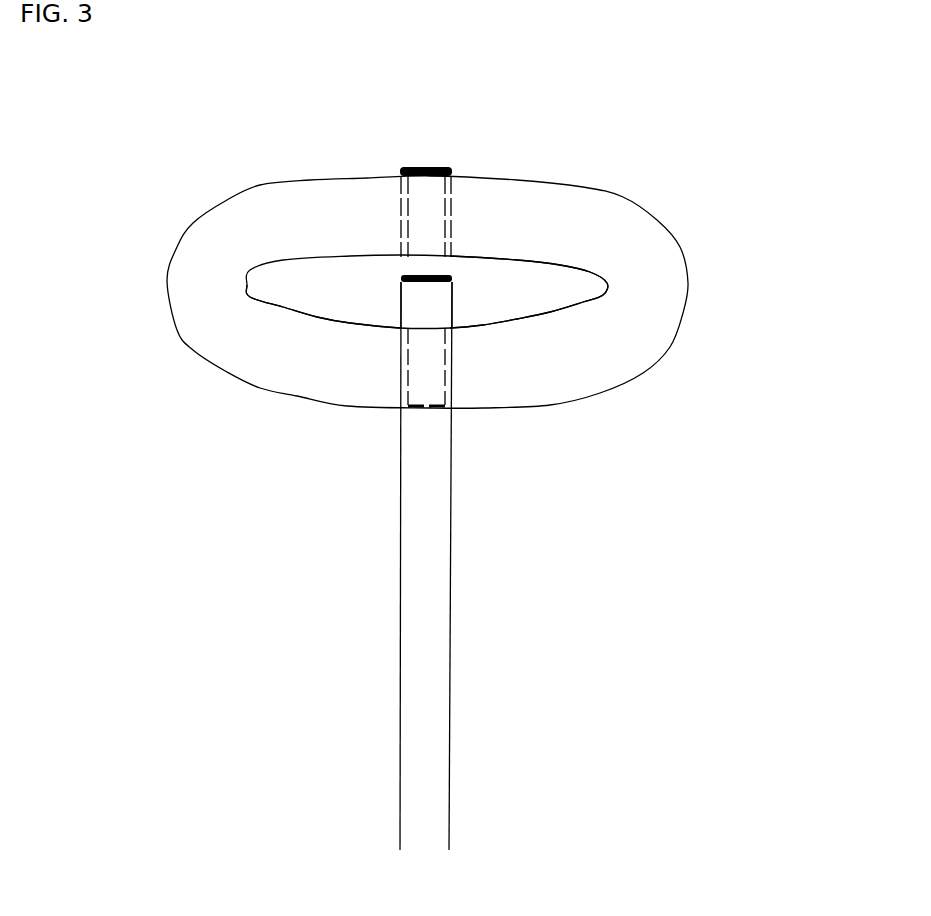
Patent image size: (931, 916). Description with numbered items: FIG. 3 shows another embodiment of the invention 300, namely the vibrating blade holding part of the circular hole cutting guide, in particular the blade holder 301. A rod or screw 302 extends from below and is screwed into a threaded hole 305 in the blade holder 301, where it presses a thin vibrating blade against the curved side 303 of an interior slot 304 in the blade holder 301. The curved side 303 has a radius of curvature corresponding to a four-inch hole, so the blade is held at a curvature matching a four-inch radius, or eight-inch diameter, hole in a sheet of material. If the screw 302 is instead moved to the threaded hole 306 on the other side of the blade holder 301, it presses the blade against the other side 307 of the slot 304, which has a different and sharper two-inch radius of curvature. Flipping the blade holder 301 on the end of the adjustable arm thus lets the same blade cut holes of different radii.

The embodiment of the invention 300 is at (600, 157).
The blade holder 301 is at (280, 214).
The screw 302 is at (432, 492).
The curved side 303 is at (518, 260).
The interior slot 304 is at (515, 308).
The threaded hole 305 is at (452, 373).
The threaded hole 306 is at (455, 223).
The other side 307 is at (325, 325).